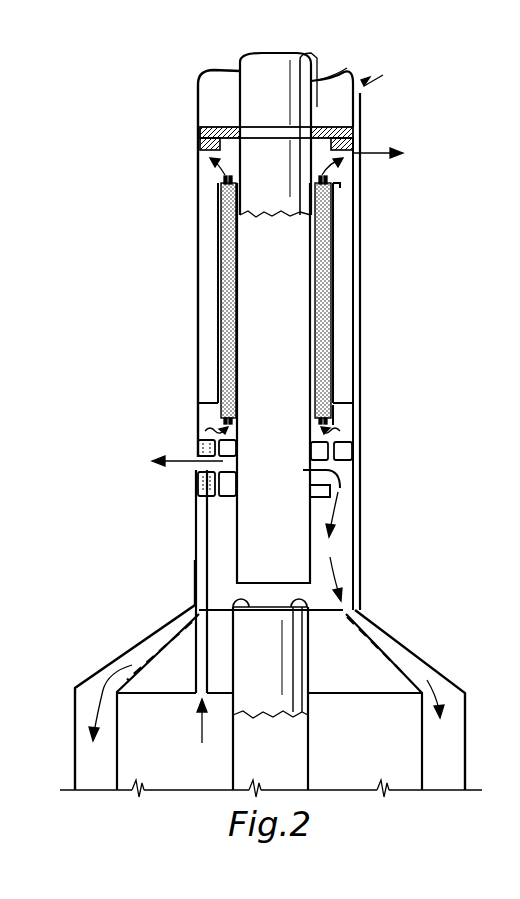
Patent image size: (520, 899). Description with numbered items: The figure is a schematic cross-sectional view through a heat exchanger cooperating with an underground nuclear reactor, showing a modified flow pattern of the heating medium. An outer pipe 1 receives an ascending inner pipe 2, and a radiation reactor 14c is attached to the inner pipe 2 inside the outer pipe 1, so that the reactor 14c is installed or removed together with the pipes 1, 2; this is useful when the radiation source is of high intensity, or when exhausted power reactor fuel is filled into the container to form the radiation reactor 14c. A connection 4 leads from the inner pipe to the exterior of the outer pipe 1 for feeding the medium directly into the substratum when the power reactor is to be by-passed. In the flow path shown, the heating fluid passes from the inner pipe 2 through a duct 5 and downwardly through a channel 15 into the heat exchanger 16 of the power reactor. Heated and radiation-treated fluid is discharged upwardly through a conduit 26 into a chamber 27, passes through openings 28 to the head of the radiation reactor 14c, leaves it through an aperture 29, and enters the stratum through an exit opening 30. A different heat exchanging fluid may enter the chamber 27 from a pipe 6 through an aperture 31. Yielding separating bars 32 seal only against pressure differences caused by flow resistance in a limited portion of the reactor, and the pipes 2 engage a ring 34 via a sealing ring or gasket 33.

The outer pipe 1 is at (197, 288).
The inner pipe 2 is at (255, 108).
The connection 4 is at (180, 467).
The duct 5 is at (340, 500).
The pipe 6 is at (362, 292).
The radiation reactor 14c is at (312, 255).
The channel 15 is at (95, 762).
The heat exchanger 16 is at (407, 775).
The conduit 26 is at (200, 548).
The chamber 27 is at (198, 420).
The openings 28 is at (354, 446).
The aperture 29 is at (334, 183).
The exit opening 30 is at (372, 157).
The aperture 31 is at (354, 428).
The yielding separating bars 32 is at (334, 413).
The sealing ring 33 is at (200, 130).
The ring 34 is at (200, 145).